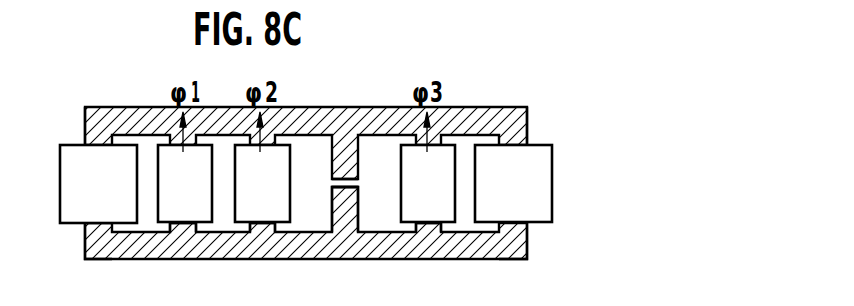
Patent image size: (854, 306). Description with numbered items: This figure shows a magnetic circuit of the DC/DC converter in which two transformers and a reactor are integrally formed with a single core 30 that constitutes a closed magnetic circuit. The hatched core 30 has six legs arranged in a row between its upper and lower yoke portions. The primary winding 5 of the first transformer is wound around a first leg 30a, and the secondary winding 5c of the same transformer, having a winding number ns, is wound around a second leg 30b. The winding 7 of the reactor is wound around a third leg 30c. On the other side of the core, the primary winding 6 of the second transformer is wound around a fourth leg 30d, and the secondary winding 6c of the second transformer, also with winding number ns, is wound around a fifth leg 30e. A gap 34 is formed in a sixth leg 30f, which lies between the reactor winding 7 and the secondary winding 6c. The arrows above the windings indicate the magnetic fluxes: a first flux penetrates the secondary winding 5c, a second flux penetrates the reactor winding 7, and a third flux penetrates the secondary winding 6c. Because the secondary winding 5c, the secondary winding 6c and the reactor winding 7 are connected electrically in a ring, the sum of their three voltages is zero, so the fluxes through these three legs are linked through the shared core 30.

The primary winding of transformer T1 5 is at (60, 178).
The secondary winding of transformer T1 5c is at (155, 160).
The primary winding of transformer T2 6 is at (553, 197).
The secondary winding of transformer T2 6c is at (458, 160).
The winding of reactor L3 7 is at (290, 196).
The core 30 is at (312, 107).
The first leg 30a is at (87, 229).
The second leg 30b is at (200, 232).
The third leg 30c is at (275, 225).
The fourth leg 30d is at (527, 231).
The fifth leg 30e is at (444, 228).
The sixth leg 30f is at (360, 231).
The gap 34 is at (357, 182).